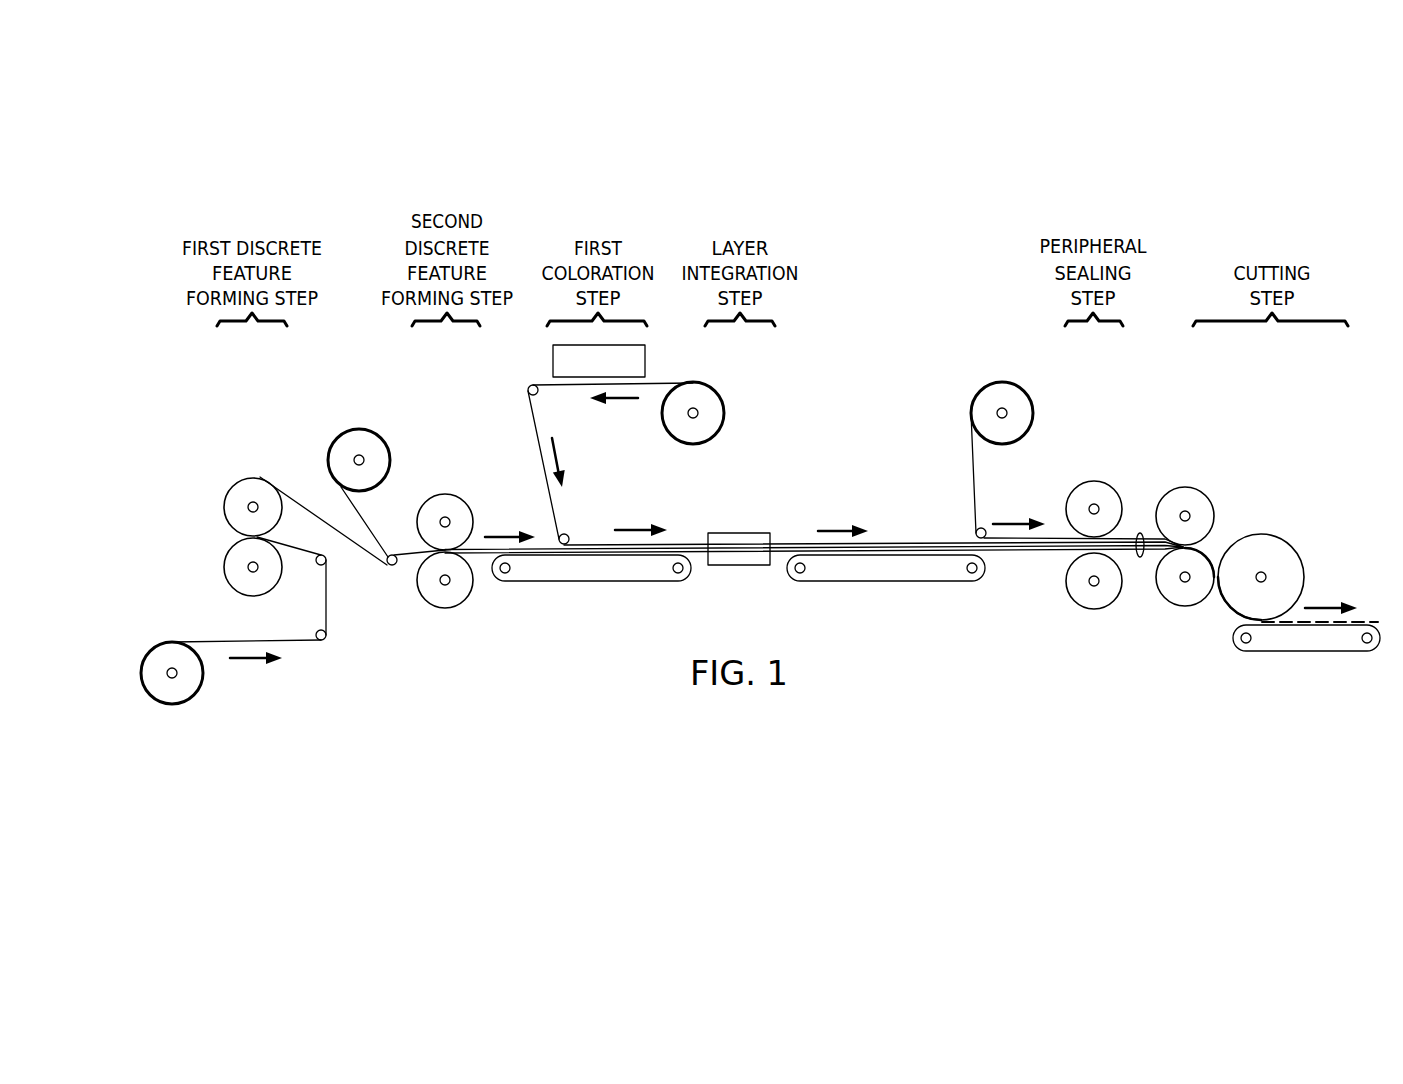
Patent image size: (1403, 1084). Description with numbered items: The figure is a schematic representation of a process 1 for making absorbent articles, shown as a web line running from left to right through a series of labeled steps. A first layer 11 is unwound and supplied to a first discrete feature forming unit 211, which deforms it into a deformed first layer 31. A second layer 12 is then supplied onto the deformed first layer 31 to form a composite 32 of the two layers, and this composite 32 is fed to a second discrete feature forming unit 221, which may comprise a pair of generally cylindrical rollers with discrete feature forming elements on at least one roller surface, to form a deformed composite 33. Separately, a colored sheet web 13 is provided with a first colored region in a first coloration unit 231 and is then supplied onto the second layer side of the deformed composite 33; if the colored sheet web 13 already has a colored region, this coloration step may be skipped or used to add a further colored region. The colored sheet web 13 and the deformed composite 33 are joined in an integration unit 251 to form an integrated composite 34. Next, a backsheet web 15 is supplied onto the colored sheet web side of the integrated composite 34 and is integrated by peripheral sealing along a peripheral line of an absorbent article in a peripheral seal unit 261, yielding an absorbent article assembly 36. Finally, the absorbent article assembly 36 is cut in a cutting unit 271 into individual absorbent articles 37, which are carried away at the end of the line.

The process 1 is at (173, 380).
The first layer 11 is at (172, 705).
The second layer 12 is at (359, 429).
The colored sheet web 13 is at (725, 417).
The backsheet web 15 is at (1033, 418).
The deformed first layer 31 is at (311, 511).
The composite 32 is at (410, 567).
The deformed composite 33 is at (477, 557).
The integrated composite 34 is at (802, 546).
The absorbent article assembly 36 is at (1140, 558).
The individual absorbent articles 37 is at (1370, 622).
The first discrete feature forming unit 211 is at (251, 470).
The second discrete feature forming unit 221 is at (444, 486).
The first coloration unit 231 is at (553, 361).
The integration unit 251 is at (740, 567).
The peripheral seal unit 261 is at (1096, 633).
The cutting unit 271 is at (1212, 471).